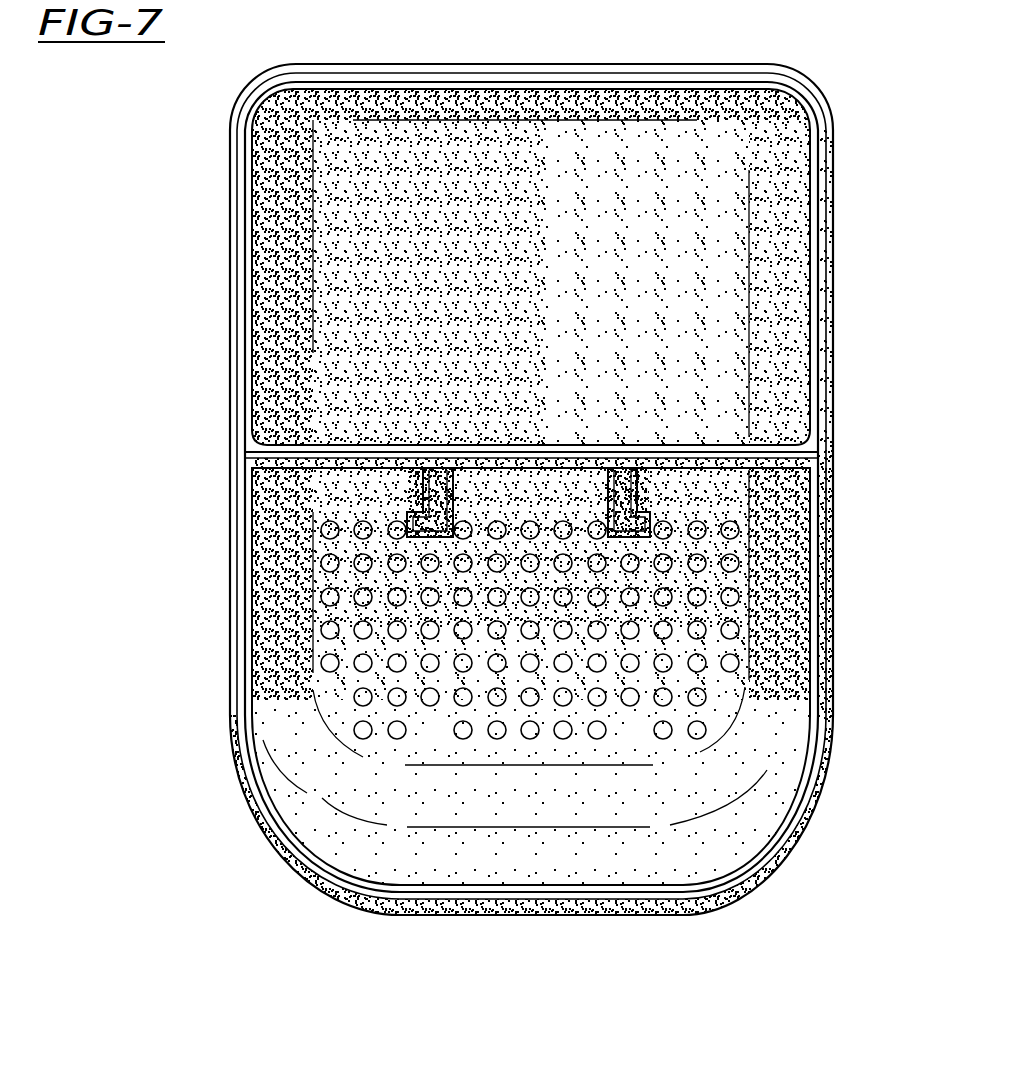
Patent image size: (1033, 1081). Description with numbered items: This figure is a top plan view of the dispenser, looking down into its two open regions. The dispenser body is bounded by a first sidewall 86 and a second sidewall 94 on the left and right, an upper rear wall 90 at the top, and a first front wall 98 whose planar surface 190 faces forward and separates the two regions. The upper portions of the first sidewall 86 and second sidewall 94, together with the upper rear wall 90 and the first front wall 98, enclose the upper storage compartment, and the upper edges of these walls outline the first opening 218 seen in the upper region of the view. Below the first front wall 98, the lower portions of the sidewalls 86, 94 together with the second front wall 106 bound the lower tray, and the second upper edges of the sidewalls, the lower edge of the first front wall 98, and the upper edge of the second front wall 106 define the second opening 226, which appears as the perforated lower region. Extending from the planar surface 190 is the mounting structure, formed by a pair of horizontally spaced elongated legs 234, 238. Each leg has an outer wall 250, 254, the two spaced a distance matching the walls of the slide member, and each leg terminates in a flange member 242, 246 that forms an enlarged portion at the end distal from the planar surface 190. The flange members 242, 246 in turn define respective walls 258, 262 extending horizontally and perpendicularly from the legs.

The upper rear wall 90 is at (600, 64).
The second sidewall 94 is at (838, 465).
The first front wall 98 is at (770, 473).
The second front wall 106 is at (515, 915).
The first sidewall 86 is at (243, 507).
The first opening 218 is at (562, 392).
The second opening 226 is at (453, 754).
The planar surface 190 is at (527, 497).
The wall 258 is at (410, 500).
The outer wall 250 is at (420, 497).
The leg 234 is at (433, 500).
The flange member 242 is at (340, 548).
The outer wall 254 is at (660, 487).
The leg 238 is at (617, 487).
The flange member 246 is at (632, 537).
The wall 262 is at (748, 503).